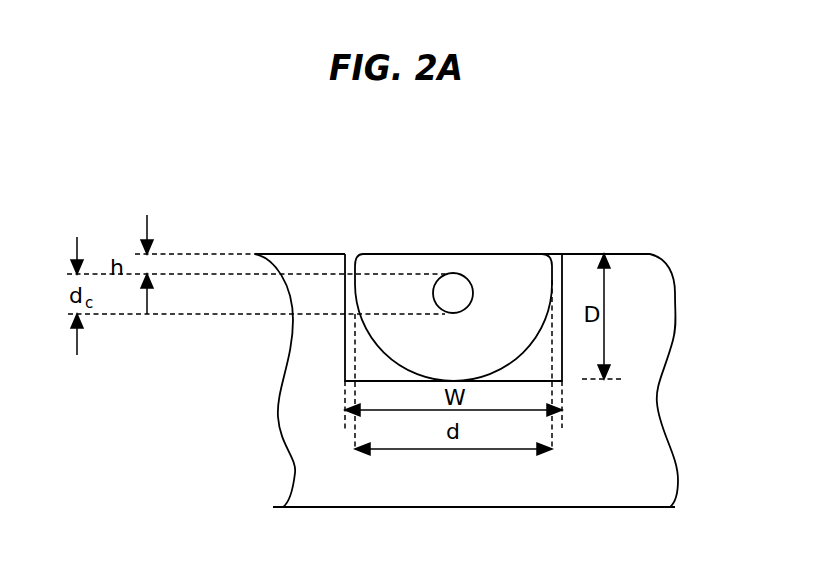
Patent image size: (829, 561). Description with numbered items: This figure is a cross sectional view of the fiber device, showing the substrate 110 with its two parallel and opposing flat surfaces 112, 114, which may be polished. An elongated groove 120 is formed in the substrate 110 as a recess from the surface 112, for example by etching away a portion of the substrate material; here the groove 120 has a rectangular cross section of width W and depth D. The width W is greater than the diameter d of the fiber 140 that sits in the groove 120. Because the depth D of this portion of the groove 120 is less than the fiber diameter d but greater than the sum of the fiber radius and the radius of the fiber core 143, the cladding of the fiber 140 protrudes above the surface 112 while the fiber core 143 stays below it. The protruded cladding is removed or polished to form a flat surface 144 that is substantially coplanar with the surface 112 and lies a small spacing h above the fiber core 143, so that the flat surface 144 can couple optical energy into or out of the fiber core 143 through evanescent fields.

The substrate 110 is at (657, 490).
The substrate surface 112 is at (280, 253).
The substrate surface 114 is at (602, 507).
The groove 120 is at (347, 278).
The fiber 140 is at (522, 270).
The fiber core 143 is at (453, 301).
The flat surface 144 is at (475, 253).